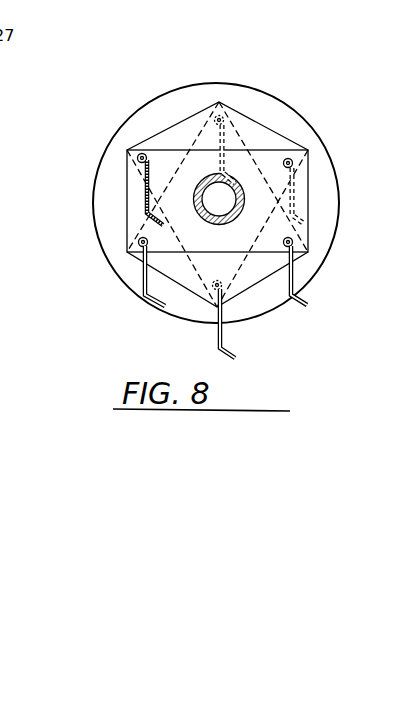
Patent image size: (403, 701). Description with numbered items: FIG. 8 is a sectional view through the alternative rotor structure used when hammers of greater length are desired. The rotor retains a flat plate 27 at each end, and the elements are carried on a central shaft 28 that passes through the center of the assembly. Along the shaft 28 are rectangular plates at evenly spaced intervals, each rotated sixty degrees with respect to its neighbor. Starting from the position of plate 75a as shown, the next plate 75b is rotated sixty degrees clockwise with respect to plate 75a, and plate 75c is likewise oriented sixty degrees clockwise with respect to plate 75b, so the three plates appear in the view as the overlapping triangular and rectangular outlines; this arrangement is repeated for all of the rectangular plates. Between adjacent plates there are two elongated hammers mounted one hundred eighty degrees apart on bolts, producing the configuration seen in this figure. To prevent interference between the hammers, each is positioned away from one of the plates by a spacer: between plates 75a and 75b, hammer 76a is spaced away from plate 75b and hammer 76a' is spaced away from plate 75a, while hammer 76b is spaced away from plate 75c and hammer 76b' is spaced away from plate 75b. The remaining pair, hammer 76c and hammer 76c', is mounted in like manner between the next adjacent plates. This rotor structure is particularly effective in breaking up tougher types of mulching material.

The flat plate 27 is at (187, 85).
The central shaft 28 is at (234, 183).
The rectangular plate 75a is at (183, 128).
The rectangular plate 75b is at (260, 128).
The rectangular plate 75c is at (232, 249).
The elongated hammer 76a is at (247, 323).
The elongated hammer 76a' is at (280, 119).
The elongated hammer 76b is at (138, 307).
The elongated hammer 76b' is at (335, 174).
The elongated hammer 76c is at (323, 275).
The elongated hammer 76c' is at (86, 192).